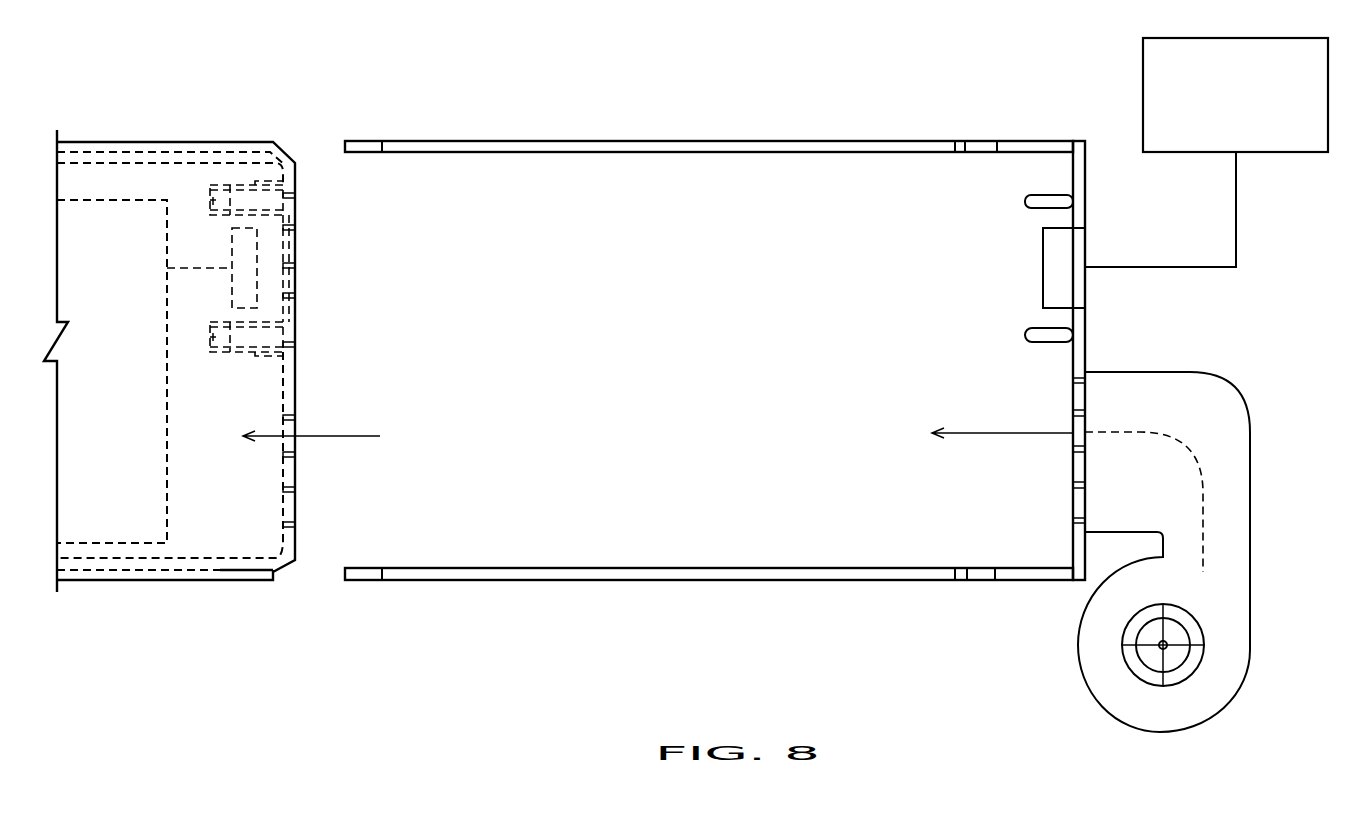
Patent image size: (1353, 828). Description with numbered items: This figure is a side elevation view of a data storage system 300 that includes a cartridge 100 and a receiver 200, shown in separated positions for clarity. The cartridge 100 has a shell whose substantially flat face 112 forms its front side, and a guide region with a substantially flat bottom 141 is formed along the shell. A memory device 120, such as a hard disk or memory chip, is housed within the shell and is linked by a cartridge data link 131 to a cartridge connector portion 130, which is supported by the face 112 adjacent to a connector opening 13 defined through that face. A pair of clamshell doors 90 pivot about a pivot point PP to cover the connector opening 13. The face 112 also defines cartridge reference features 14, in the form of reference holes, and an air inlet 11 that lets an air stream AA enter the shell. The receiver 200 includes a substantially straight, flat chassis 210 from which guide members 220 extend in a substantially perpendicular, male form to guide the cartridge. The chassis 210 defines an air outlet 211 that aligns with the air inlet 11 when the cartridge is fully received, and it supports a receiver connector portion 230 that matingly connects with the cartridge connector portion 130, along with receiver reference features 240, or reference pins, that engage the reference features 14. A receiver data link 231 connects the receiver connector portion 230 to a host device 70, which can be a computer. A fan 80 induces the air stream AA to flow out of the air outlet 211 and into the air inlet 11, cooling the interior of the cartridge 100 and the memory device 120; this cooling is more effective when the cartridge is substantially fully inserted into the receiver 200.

The cartridge 100 is at (185, 118).
The bottom 141 is at (222, 141).
The face 112 is at (295, 535).
The memory device 120 is at (167, 525).
The cartridge reference feature 14 is at (295, 202).
The pivot point PP is at (212, 202).
The connector opening 13 is at (290, 243).
The door 90 is at (290, 270).
The cartridge connector portion 130 is at (257, 284).
The cartridge data link 131 is at (194, 268).
The air inlet 11 is at (283, 425).
The air stream AA is at (729, 513).
The receiver 200 is at (800, 120).
The guide member 220 is at (425, 141).
The chassis 210 is at (1088, 350).
The air outlet 211 is at (1073, 425).
The receiver connector portion 230 is at (1052, 272).
The receiver reference feature 240 is at (1038, 207).
The receiver data link 231 is at (1237, 224).
The host device 70 is at (1155, 124).
The fan 80 is at (1238, 652).
The data storage system 300 is at (607, 50).